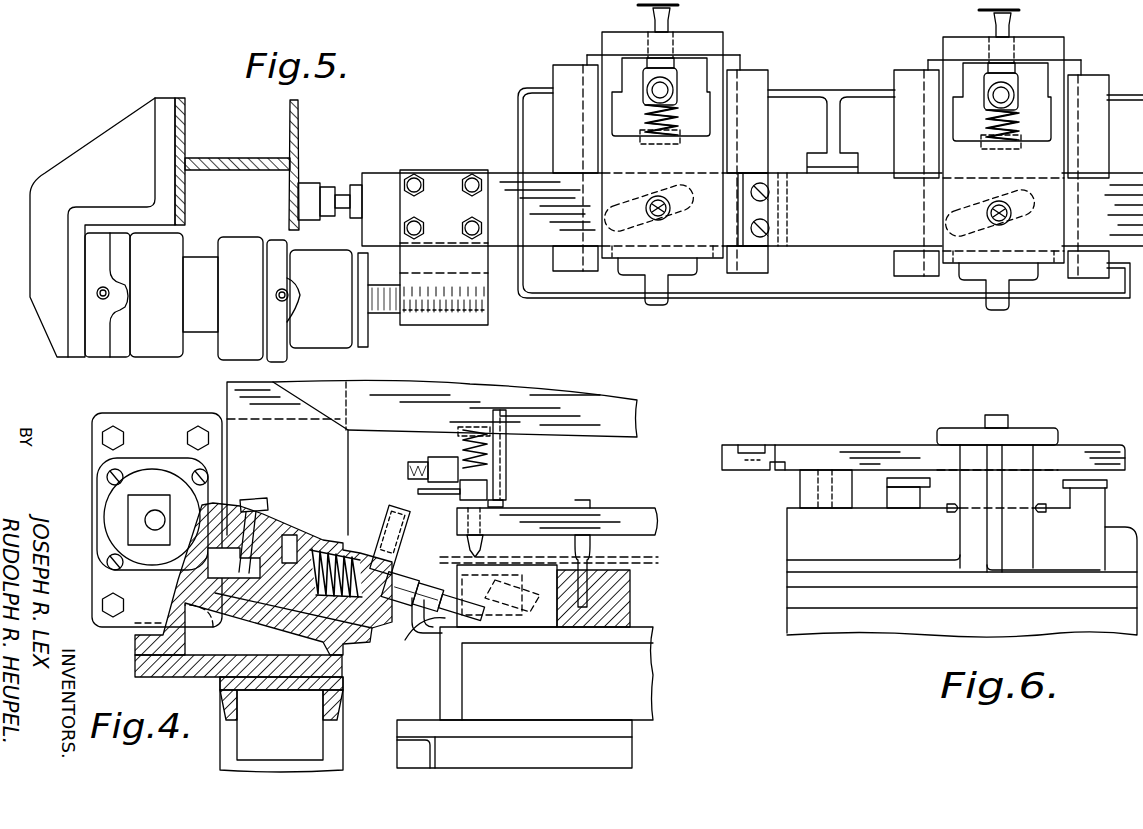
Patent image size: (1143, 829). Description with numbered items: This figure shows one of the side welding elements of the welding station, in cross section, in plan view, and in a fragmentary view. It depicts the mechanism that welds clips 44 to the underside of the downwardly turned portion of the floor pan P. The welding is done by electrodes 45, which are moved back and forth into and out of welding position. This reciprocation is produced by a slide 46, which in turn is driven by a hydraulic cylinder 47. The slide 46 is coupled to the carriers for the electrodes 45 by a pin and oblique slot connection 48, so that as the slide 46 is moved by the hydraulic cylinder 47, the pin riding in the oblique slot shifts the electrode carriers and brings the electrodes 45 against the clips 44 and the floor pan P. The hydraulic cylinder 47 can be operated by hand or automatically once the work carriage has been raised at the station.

In FIG. 4, the clips 44 is at (440, 632).
In FIG. 5, the electrodes 45 is at (678, 30).
In FIG. 4, the electrodes 45 is at (428, 583).
In FIG. 5, the slide 46 is at (503, 195).
In FIG. 6, the slide 46 is at (872, 448).
In FIG. 5, the hydraulic cylinder 47 is at (315, 275).
In FIG. 5, the pin and oblique slot connection 48 is at (652, 222).
In FIG. 4, the floor pan P is at (535, 560).